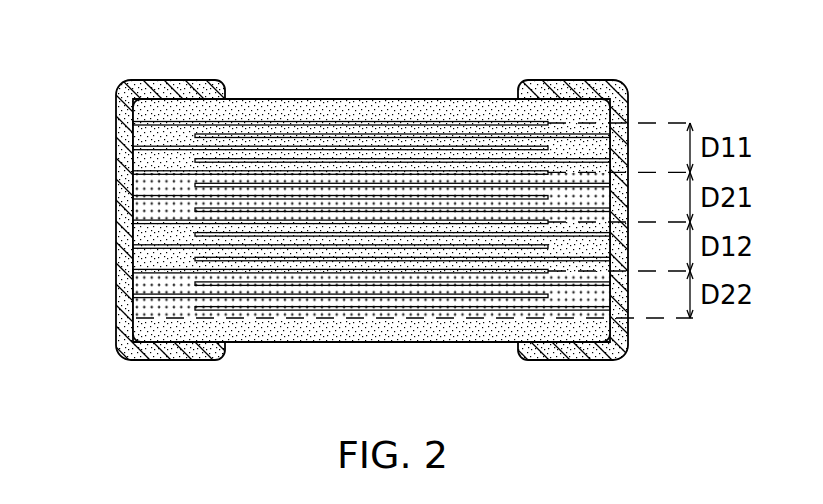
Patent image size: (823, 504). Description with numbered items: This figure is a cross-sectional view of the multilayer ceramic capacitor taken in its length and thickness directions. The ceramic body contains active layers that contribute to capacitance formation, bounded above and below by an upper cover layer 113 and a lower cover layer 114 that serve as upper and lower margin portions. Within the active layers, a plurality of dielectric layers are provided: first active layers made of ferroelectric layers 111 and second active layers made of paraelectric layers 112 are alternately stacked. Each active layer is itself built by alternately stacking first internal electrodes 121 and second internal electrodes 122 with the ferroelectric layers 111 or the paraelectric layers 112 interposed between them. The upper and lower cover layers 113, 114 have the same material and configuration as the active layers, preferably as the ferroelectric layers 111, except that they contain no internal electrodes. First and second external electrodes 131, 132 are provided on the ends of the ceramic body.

The ferroelectric layer 111 is at (197, 135).
The paraelectric layer 112 is at (207, 217).
The upper cover layer 113 is at (284, 109).
The lower cover layer 114 is at (413, 331).
The first internal electrode 121 is at (233, 122).
The second internal electrode 122 is at (383, 134).
The first external electrode 131 is at (165, 90).
The second external electrode 132 is at (585, 83).